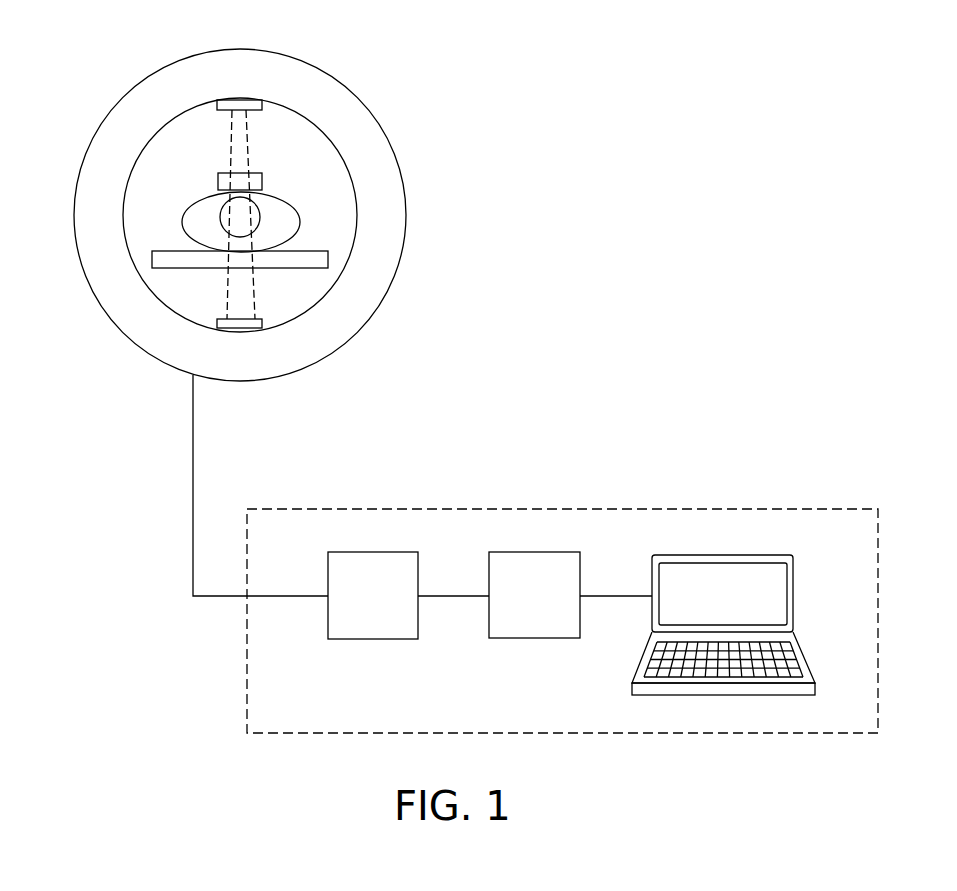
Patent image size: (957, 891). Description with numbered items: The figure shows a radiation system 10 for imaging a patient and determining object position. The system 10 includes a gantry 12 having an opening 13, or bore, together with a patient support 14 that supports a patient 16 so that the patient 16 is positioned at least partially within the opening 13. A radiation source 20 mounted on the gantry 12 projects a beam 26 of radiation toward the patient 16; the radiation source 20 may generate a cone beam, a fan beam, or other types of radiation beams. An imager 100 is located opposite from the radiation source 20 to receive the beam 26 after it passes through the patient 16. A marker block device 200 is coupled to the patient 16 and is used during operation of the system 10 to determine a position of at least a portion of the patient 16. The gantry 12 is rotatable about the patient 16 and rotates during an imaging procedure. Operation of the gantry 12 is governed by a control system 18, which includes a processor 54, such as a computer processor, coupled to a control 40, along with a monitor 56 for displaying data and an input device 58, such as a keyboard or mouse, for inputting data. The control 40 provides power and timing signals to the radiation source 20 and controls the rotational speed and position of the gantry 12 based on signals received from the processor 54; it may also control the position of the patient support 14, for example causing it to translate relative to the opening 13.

The radiation system 10 is at (489, 56).
The gantry 12 is at (348, 88).
The opening 13 is at (322, 157).
The patient support 14 is at (185, 268).
The patient 16 is at (302, 229).
The control system 18 is at (658, 509).
The radiation source 20 is at (252, 100).
The beam 26 is at (232, 130).
The control 40 is at (387, 608).
The processor 54 is at (548, 608).
The monitor 56 is at (795, 575).
The input device 58 is at (800, 647).
The imager 100 is at (263, 325).
The marker block device 200 is at (218, 185).